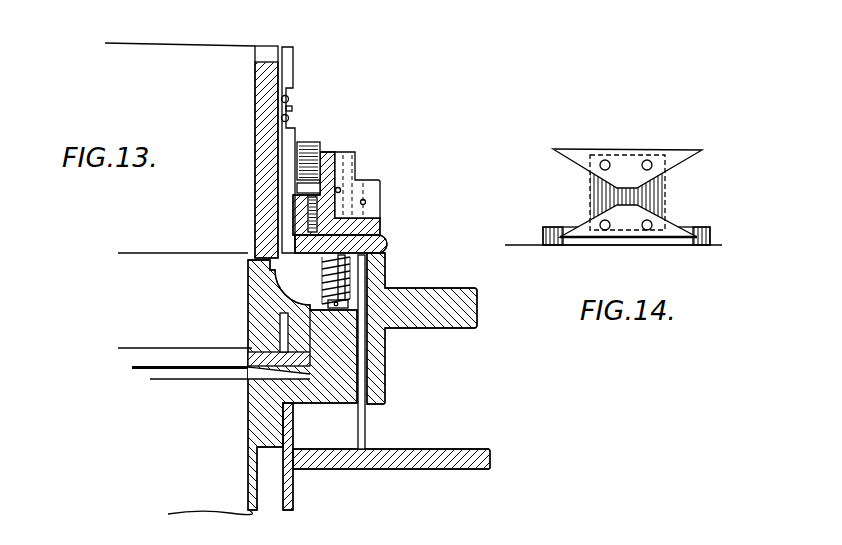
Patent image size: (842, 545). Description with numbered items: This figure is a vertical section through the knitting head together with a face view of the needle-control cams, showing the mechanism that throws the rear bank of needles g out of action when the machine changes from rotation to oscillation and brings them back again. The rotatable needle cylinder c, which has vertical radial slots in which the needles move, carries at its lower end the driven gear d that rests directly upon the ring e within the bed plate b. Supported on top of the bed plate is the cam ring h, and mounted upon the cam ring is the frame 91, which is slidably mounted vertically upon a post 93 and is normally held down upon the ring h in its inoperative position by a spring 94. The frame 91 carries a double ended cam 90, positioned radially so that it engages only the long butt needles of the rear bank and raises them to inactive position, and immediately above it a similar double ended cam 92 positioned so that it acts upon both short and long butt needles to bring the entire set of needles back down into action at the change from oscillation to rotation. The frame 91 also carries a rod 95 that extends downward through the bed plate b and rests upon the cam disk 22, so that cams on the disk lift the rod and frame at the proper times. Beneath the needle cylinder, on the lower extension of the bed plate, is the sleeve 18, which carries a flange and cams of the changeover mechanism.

In FIG. 13, the sleeve 18 is at (293, 493).
In FIG. 13, the cam disk 22 is at (492, 460).
In FIG. 13, the double ended cam 90 is at (308, 213).
In FIG. 14, the double ended cam 90 is at (667, 218).
In FIG. 13, the frame 91 is at (357, 163).
In FIG. 14, the frame 91 is at (590, 193).
In FIG. 13, the double ended cam 92 is at (305, 161).
In FIG. 14, the double ended cam 92 is at (668, 158).
In FIG. 13, the post 93 is at (345, 280).
In FIG. 13, the spring 94 is at (327, 271).
In FIG. 13, the rod 95 is at (366, 424).
In FIG. 13, the bed plate b is at (457, 293).
In FIG. 13, the needle cylinder c is at (293, 90).
In FIG. 13, the driven gear d is at (273, 327).
In FIG. 13, the ring e is at (242, 373).
In FIG. 13, the needles g is at (308, 190).
In FIG. 13, the cam ring h is at (382, 241).
In FIG. 14, the cam ring h is at (513, 243).